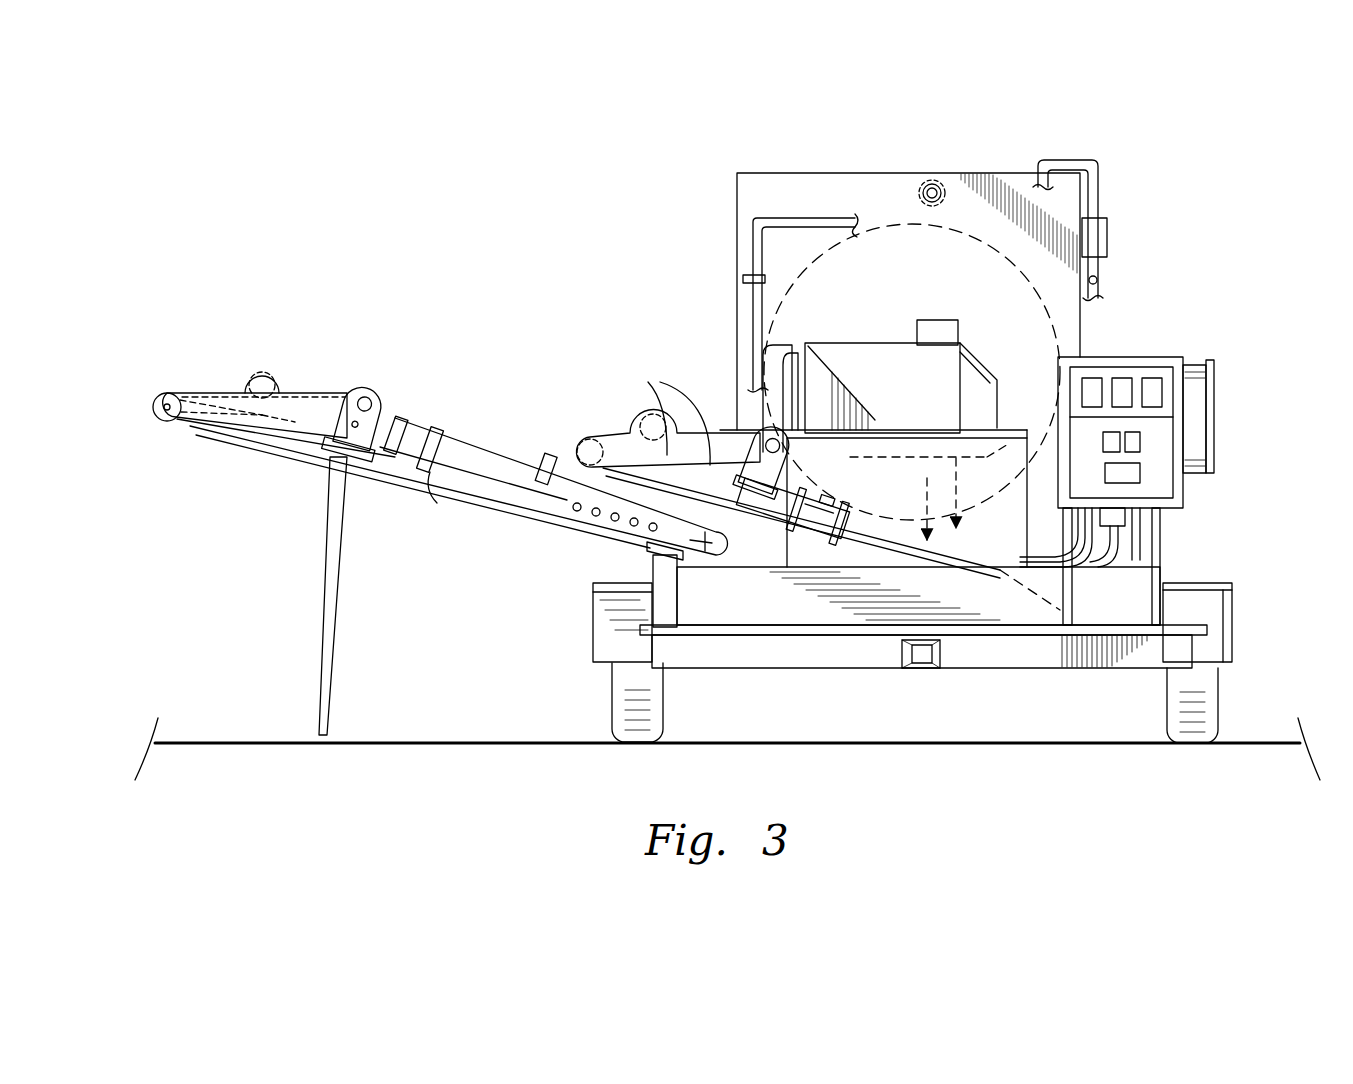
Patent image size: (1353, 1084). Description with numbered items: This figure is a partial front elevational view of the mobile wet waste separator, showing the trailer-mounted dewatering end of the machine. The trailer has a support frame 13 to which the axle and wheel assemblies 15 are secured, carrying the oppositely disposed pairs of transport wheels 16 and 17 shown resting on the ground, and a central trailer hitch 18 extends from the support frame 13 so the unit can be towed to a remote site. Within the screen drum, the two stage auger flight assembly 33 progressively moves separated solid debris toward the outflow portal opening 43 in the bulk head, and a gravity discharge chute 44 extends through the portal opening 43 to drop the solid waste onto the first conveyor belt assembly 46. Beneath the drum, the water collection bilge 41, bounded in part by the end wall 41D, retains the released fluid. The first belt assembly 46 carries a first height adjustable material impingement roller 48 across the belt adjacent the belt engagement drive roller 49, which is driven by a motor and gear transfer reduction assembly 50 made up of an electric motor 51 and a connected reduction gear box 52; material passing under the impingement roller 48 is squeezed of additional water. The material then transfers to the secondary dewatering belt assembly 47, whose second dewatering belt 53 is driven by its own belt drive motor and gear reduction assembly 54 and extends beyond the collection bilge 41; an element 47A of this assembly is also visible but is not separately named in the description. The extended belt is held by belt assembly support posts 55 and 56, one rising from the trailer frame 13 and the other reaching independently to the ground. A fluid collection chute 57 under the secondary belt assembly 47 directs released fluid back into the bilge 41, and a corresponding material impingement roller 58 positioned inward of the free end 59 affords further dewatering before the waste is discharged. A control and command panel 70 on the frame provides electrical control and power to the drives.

The support frame 13 is at (1075, 650).
The axle and wheel assemblies 15 is at (608, 690).
The transport wheel 16 is at (636, 745).
The transport wheel 17 is at (1195, 745).
The central trailer hitch 18 is at (930, 658).
The two stage auger flight assembly 33 is at (900, 222).
The water collection bilge 41 is at (770, 600).
The end wall 41D is at (865, 605).
The outflow portal opening 43 is at (935, 395).
The gravity discharge chute 44 is at (820, 395).
The first conveyor belt assembly 46 is at (708, 393).
The secondary dewatering belt assembly 47 is at (460, 502).
The conveyor rail 47A is at (712, 470).
The first height adjustable material impingement roller 48 is at (650, 408).
The belt engagement drive roller 49 is at (588, 440).
The motor and gear transfer reduction assembly 50 is at (822, 452).
The electric motor 51 is at (845, 465).
The reduction gear box 52 is at (782, 500).
The second dewatering belt 53 is at (290, 422).
The belt drive motor and gear reduction assembly 54 is at (424, 430).
The belt assembly support post 55 is at (662, 572).
The belt assembly support post 56 is at (340, 588).
The fluid collection chute 57 is at (517, 505).
The material impingement roller 58 is at (265, 366).
The free end 59 is at (151, 466).
The control and command panel 70 is at (1165, 355).